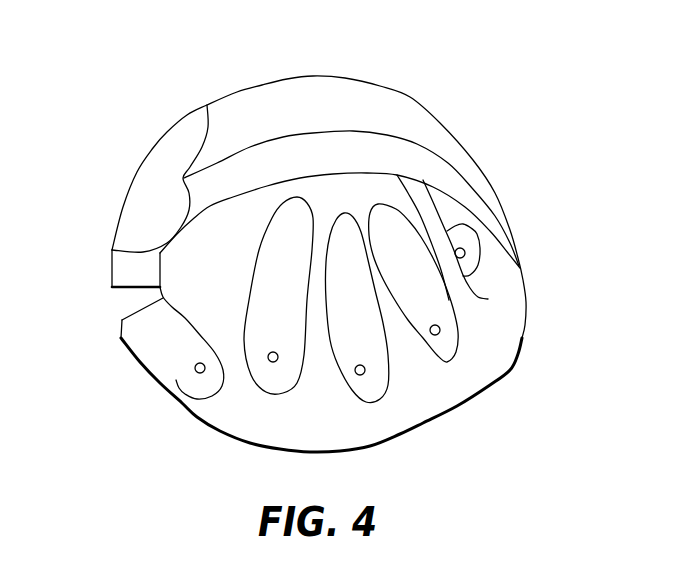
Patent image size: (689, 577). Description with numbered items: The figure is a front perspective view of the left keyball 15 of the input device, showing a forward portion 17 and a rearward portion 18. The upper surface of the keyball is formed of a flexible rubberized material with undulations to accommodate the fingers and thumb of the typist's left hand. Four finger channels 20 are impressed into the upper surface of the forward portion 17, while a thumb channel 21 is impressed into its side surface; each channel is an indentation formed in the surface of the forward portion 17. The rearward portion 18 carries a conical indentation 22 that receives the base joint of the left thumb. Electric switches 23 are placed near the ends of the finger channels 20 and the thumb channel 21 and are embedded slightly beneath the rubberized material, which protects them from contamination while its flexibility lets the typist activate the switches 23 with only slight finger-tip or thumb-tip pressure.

The left keyball 15 is at (488, 120).
The forward portion 17 is at (435, 433).
The rearward portion 18 is at (345, 79).
The finger channels 20 is at (267, 285).
The thumb channel 21 is at (163, 342).
The conical indentation 22 is at (150, 207).
The electric switches 23 is at (193, 378).